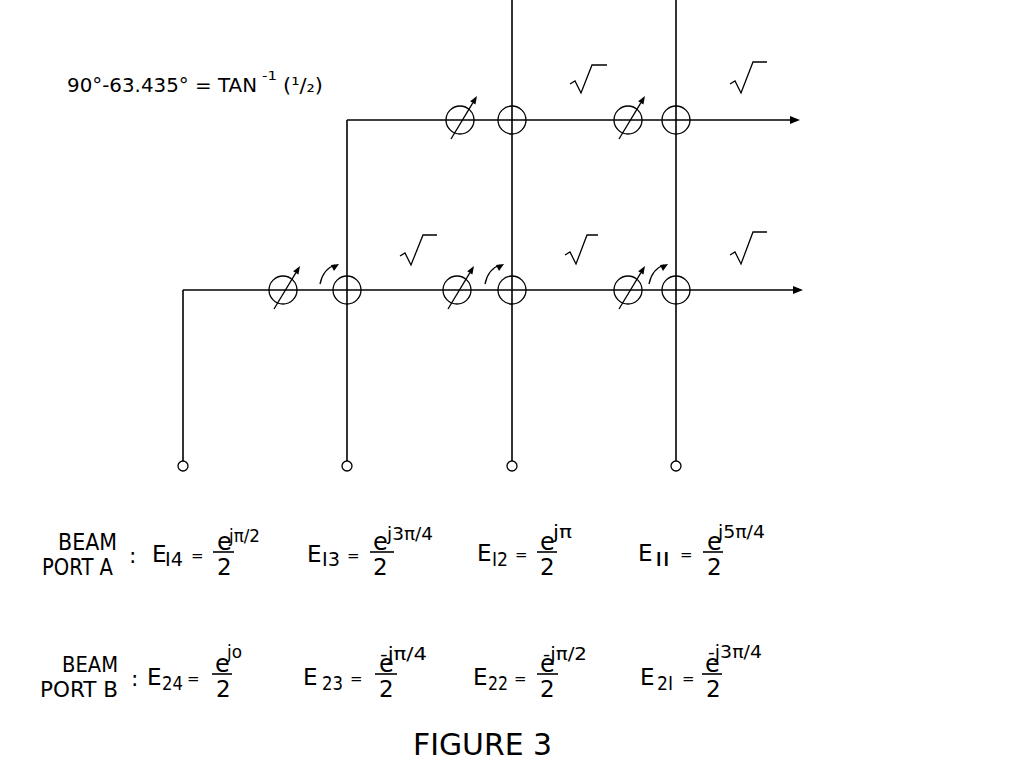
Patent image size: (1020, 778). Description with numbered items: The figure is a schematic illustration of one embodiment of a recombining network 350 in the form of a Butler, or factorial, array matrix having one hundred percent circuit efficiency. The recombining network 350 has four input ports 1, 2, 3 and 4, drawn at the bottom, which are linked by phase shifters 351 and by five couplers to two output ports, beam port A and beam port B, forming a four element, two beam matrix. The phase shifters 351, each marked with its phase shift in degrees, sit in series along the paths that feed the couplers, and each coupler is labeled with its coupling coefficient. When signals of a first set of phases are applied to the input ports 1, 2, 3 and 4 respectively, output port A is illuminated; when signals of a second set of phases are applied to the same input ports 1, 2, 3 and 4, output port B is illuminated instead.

The recombining network 350 is at (353, 78).
The phase shifters 351 is at (457, 104).
The input port 1 is at (683, 458).
The input port 2 is at (522, 458).
The input port 3 is at (357, 458).
The input port 4 is at (193, 458).